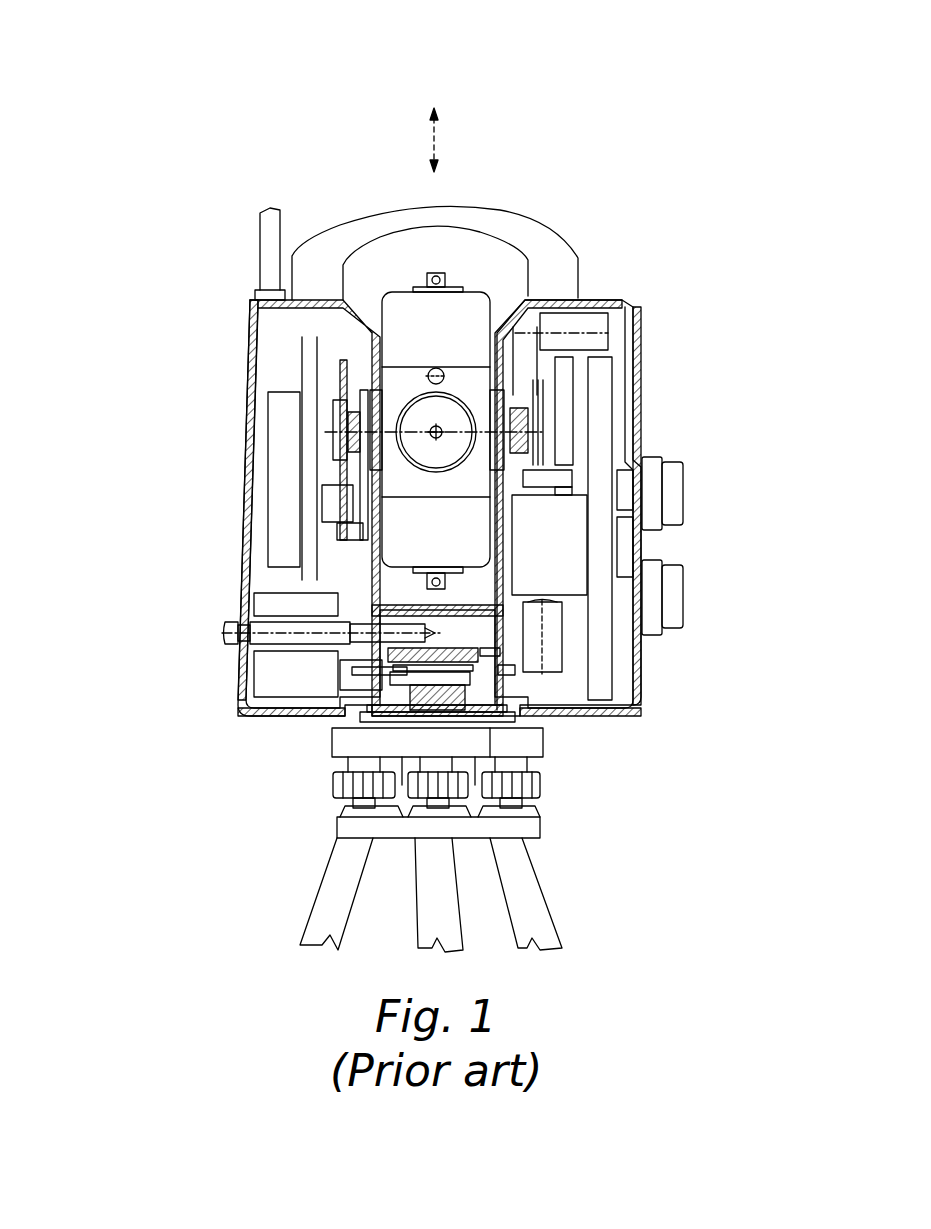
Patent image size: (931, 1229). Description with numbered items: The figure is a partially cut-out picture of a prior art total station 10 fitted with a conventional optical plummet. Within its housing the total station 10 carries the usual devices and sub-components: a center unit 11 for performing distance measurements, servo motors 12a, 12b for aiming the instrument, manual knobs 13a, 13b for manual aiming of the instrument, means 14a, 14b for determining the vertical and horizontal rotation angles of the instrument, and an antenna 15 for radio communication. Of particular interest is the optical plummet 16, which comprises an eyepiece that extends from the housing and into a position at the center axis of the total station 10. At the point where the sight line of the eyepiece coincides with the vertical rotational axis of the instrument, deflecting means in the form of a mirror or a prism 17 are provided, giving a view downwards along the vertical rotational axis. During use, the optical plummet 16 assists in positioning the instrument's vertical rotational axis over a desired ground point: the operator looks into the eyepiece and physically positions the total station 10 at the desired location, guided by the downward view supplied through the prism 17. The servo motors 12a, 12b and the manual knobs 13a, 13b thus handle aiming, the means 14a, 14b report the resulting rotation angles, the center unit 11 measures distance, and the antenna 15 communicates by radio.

The total station 10 is at (232, 152).
The center unit 11 is at (448, 412).
The servo motor 12a is at (567, 322).
The servo motor 12b is at (540, 660).
The manual knob 13a is at (670, 485).
The manual knob 13b is at (672, 587).
The means for determining rotation angles 14a is at (548, 478).
The means for determining rotation angles 14b is at (360, 680).
The antenna 15 is at (270, 270).
The optical plummet 16 is at (275, 627).
The mirror or prism 17 is at (527, 603).